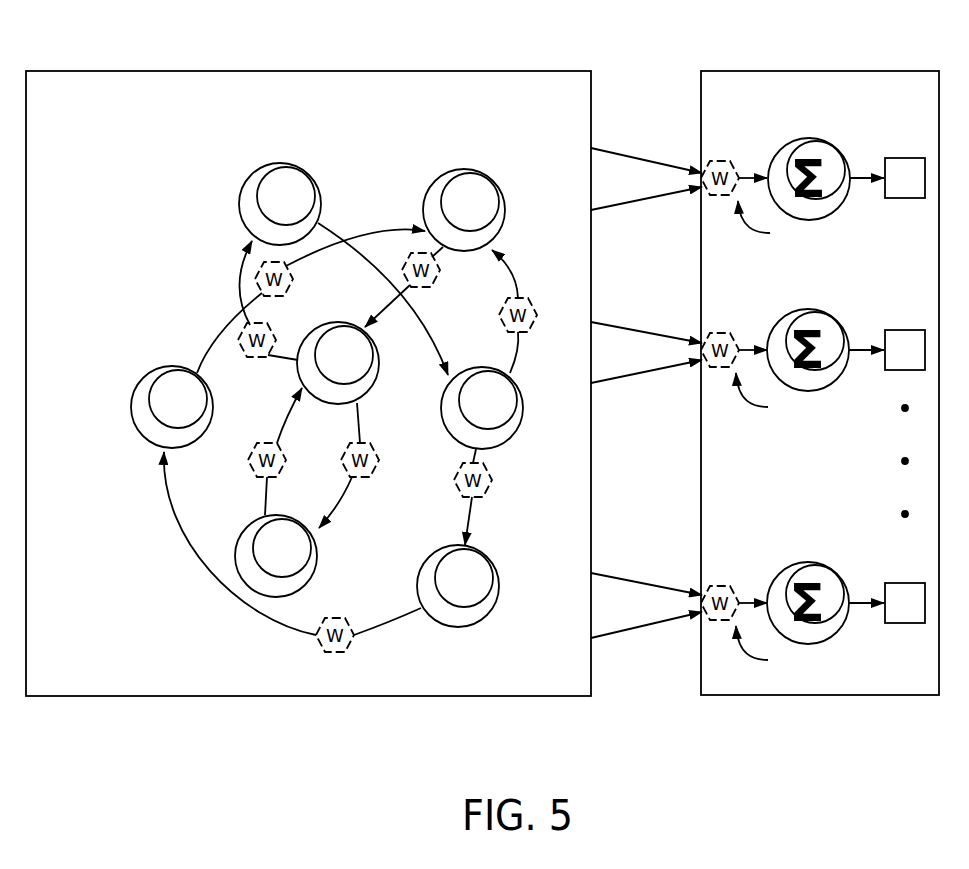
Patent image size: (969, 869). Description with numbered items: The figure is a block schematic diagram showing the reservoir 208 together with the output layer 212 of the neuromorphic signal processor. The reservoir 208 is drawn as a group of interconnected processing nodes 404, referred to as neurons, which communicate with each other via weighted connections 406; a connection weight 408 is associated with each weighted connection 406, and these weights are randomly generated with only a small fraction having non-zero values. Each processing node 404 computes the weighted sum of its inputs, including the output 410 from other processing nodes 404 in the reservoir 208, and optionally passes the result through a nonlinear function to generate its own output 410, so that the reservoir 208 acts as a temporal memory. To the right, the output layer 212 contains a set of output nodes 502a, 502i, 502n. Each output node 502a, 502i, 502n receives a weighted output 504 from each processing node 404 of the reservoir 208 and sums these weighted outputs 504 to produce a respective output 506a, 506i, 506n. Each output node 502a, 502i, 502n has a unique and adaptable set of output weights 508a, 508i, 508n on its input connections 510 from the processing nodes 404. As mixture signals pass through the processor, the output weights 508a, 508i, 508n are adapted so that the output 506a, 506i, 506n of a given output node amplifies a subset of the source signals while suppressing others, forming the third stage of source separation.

The reservoir 208 is at (273, 70).
The output layer 212 is at (780, 70).
The processing node 404 is at (462, 168).
The weighted connection 406 is at (203, 569).
The connection weight 408 is at (320, 645).
The output 410 is at (243, 259).
The weighted output 504 is at (640, 158).
The output node 502a is at (808, 138).
The output node 502i is at (810, 309).
The output node 502n is at (809, 562).
The output 506a is at (905, 158).
The output 506i is at (905, 330).
The output 506n is at (905, 583).
The output weight 508a is at (725, 161).
The output weight 508i is at (725, 333).
The output weight 508n is at (725, 586).
The input connection 510 is at (773, 438).